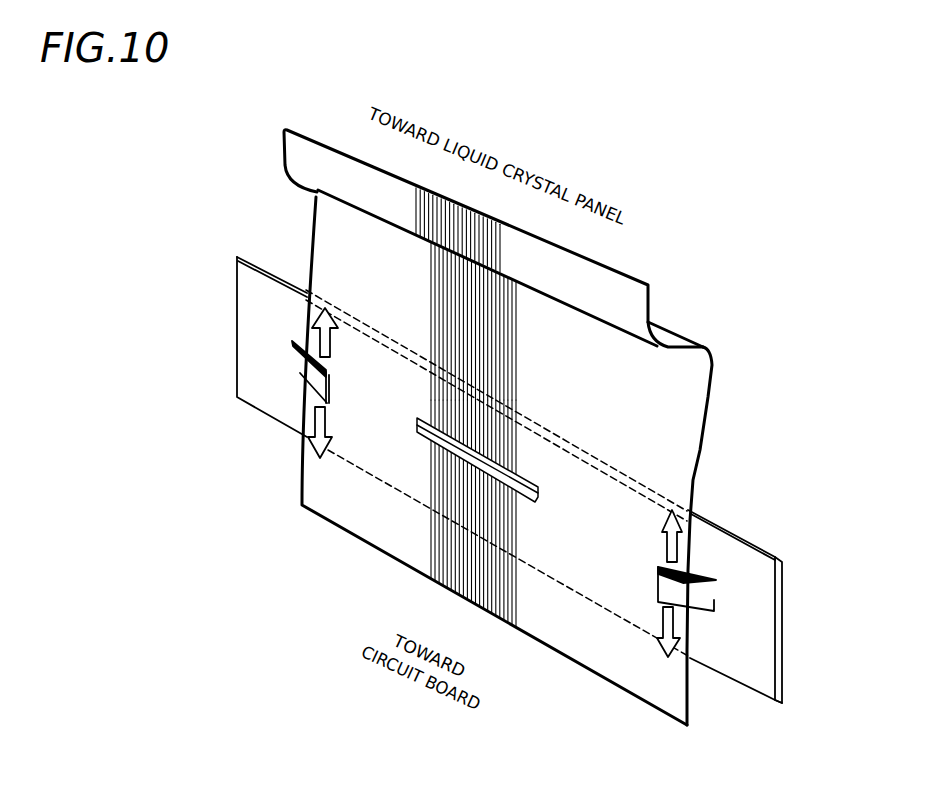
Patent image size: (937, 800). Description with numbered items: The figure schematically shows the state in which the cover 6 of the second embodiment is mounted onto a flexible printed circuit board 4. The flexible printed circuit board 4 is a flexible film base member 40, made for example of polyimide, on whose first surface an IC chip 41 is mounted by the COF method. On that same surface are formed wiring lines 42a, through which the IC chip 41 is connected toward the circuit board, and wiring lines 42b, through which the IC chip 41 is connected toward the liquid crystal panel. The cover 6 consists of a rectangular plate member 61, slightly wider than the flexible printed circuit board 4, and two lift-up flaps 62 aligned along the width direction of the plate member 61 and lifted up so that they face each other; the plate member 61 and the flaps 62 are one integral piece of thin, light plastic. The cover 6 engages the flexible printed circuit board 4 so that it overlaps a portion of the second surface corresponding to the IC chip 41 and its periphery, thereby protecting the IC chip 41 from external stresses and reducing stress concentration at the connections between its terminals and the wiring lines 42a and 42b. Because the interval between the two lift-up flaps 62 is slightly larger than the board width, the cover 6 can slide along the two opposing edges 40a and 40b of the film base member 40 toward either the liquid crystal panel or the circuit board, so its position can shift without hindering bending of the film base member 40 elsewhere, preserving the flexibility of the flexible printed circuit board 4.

The flexible printed circuit board 4 is at (493, 415).
The film base member 40 is at (685, 428).
The opposing edge of film base member 40a is at (708, 398).
The opposing edge of film base member 40b is at (313, 208).
The IC chip 41 is at (543, 498).
The wiring lines 42a is at (423, 488).
The wiring lines 42b is at (418, 290).
The cover 6 is at (209, 306).
The plate member 61 is at (752, 678).
The lift-up flaps 62 is at (302, 372).